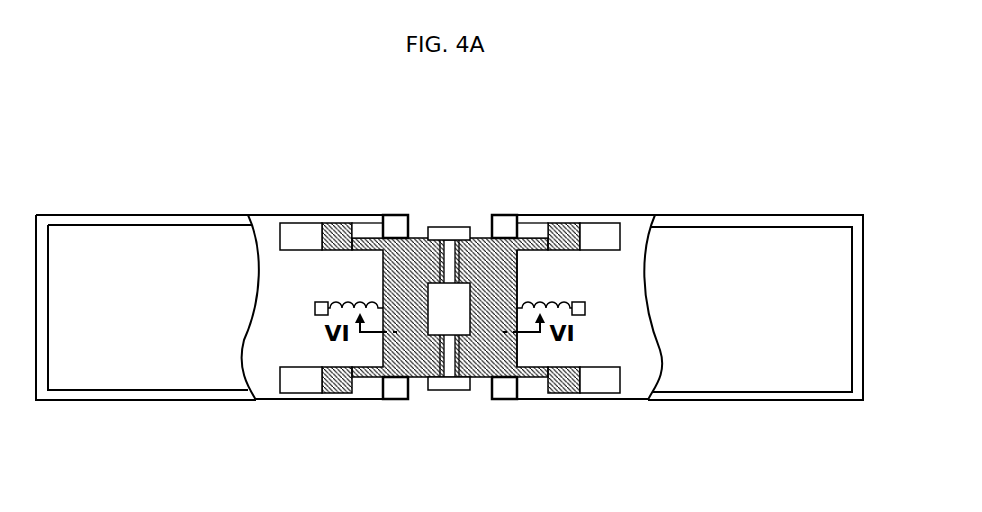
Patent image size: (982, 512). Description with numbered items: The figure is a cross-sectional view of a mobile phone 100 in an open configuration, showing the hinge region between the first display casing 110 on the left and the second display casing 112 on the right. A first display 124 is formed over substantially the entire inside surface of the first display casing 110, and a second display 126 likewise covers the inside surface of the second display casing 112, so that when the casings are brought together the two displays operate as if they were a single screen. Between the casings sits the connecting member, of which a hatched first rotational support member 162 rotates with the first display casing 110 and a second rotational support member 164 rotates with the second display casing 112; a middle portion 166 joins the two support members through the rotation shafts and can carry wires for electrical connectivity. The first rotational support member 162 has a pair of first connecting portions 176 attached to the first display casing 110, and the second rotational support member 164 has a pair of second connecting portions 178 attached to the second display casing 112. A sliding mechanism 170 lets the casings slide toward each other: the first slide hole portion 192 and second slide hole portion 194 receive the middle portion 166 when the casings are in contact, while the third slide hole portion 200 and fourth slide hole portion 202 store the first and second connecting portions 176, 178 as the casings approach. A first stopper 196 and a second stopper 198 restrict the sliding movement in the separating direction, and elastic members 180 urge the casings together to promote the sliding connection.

The assembly 100 is at (434, 175).
The first display casing 110 is at (130, 214).
The second display casing 112 is at (798, 215).
The first display 124 is at (205, 300).
The second display 126 is at (715, 310).
The first rotational support member 162 is at (418, 277).
The second rotational support member 164 is at (500, 277).
The middle portion 166 is at (457, 385).
The sliding mechanism 170 is at (237, 112).
The first connecting portion 176 is at (340, 233).
The second connecting portion 178 is at (563, 225).
The elastic member 180 is at (353, 297).
The first slide hole portion 192 is at (397, 232).
The second slide hole portion 194 is at (503, 232).
The first stopper 196 is at (368, 230).
The second stopper 198 is at (528, 232).
The third slide hole portion 200 is at (310, 235).
The fourth slide hole portion 202 is at (560, 300).